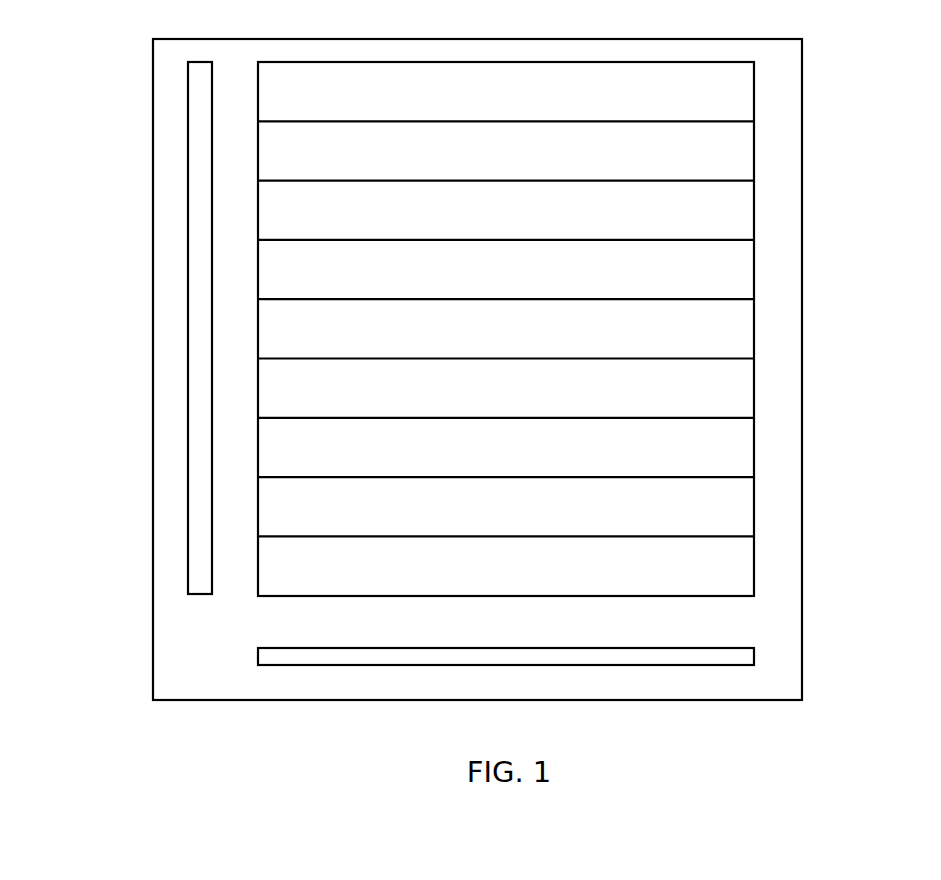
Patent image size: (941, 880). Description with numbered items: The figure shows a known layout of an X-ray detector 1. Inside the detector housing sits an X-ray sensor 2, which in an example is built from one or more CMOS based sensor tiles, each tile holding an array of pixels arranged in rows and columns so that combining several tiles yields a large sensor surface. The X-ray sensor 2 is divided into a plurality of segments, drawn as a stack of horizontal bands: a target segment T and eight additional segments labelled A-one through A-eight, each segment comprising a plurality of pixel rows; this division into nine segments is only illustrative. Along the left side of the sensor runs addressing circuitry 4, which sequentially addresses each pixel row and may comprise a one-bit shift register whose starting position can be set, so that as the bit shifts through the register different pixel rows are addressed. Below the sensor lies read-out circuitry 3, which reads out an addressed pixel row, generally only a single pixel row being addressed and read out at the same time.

The X-ray detector 1 is at (802, 165).
The X-ray sensor 2 is at (755, 345).
The read-out circuitry 3 is at (755, 653).
The addressing circuitry 4 is at (188, 192).